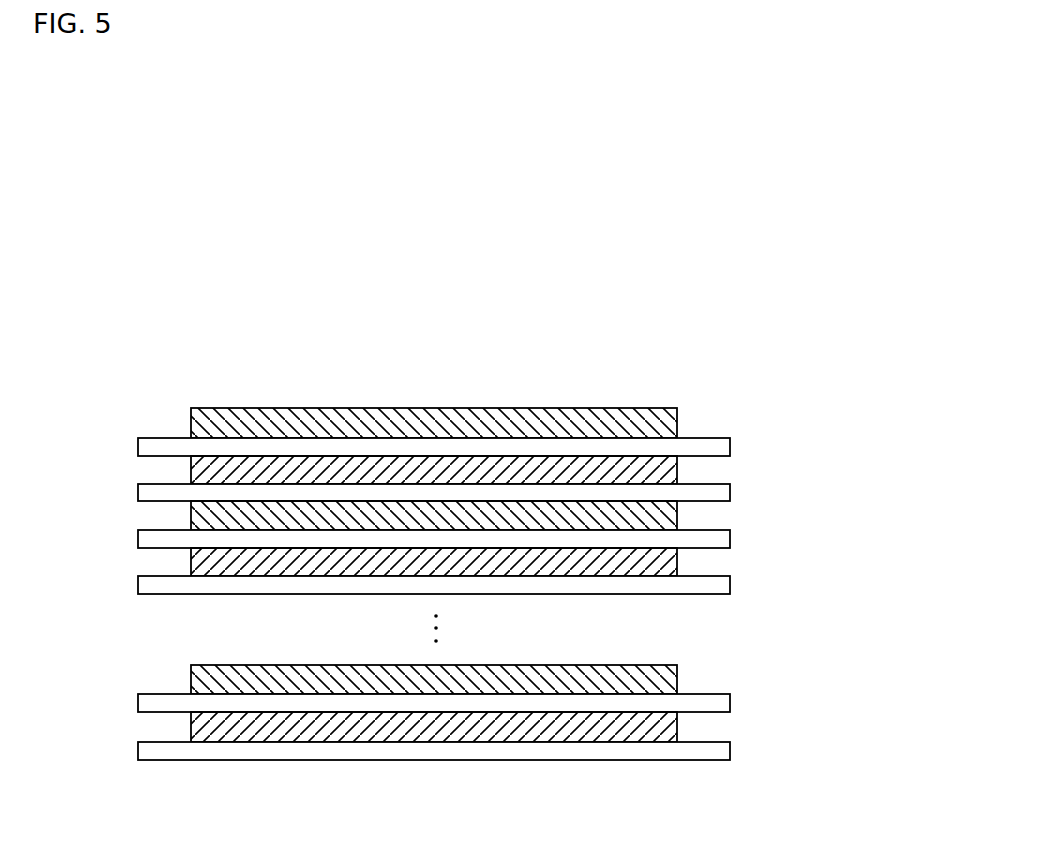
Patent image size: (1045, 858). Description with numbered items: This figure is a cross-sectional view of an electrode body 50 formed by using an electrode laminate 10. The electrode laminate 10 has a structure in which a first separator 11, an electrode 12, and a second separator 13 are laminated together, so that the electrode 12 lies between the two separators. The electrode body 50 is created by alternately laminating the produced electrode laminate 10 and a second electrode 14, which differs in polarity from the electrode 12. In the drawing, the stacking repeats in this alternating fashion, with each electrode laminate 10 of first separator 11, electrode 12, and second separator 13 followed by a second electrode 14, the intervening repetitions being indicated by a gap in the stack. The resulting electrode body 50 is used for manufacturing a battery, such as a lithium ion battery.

The electrode body 50 is at (621, 367).
The second electrode 14 is at (678, 513).
The second separator 13 is at (730, 535).
The electrode 12 is at (678, 561).
The first separator 11 is at (730, 588).
The electrode laminate 10 is at (872, 519).